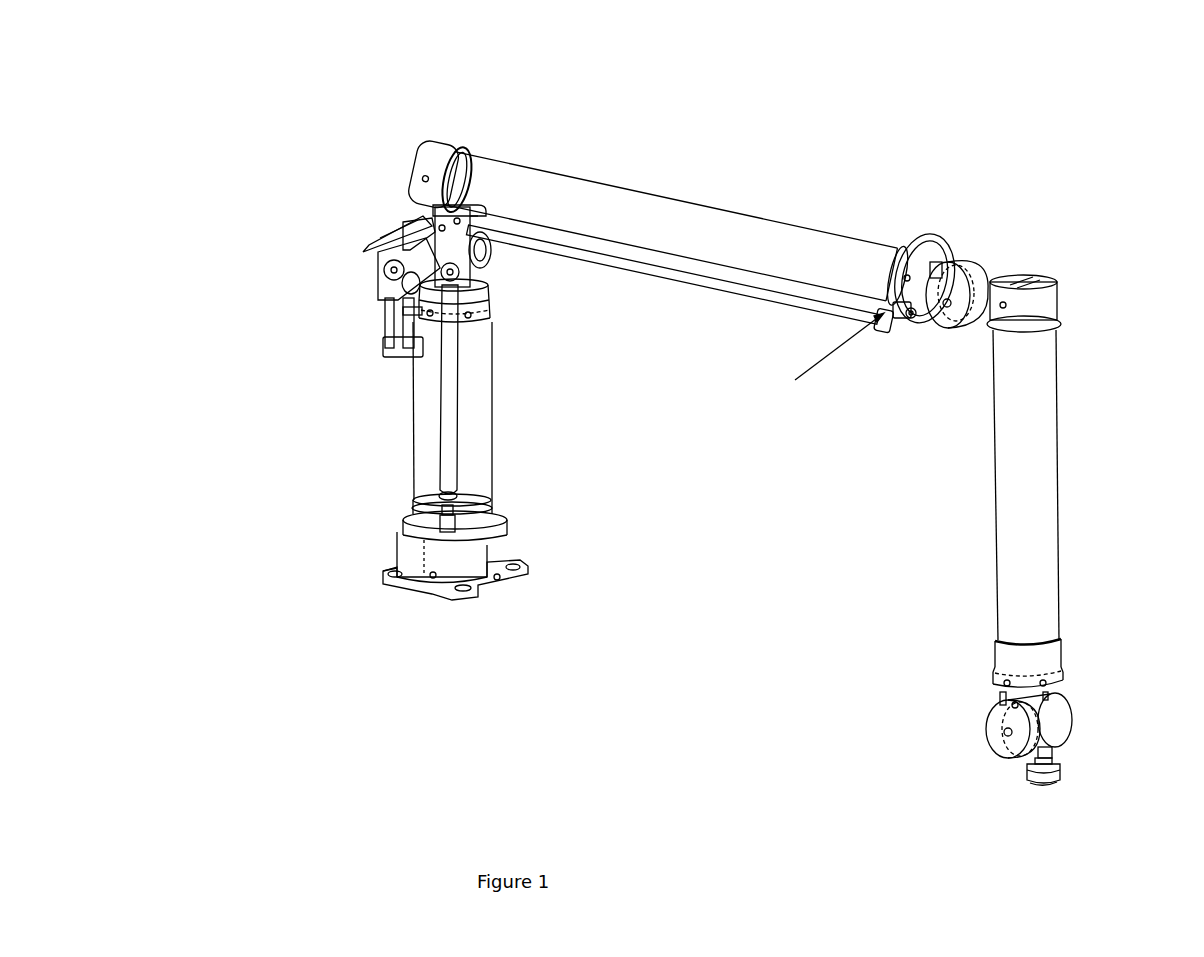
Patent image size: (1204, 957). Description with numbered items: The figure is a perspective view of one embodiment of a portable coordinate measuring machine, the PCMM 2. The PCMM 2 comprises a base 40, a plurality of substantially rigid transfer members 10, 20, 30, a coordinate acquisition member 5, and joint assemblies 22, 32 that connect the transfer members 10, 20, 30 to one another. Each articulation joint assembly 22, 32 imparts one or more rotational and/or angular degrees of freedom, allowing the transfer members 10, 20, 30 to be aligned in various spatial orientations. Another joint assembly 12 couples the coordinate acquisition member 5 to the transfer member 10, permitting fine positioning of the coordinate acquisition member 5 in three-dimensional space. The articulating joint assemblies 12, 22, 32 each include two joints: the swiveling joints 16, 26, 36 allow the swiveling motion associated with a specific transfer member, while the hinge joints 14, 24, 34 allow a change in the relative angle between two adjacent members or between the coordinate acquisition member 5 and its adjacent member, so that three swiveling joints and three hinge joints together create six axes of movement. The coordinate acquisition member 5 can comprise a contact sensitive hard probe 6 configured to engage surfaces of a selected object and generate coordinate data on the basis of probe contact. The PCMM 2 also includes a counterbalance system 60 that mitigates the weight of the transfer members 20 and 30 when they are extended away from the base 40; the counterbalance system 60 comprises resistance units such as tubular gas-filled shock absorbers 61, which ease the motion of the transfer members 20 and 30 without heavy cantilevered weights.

The coordinate measuring machine 2 is at (272, 114).
The coordinate acquisition member 5 is at (1050, 771).
The hard probe 6 is at (1028, 781).
The transfer member 10 is at (1042, 511).
The joint assembly 12 is at (1060, 695).
The hinge joint 14 is at (1000, 730).
The swiveling joint 16 is at (1003, 655).
The transfer member 20 is at (628, 205).
The joint assembly 22 is at (1005, 298).
The hinge joint 24 is at (953, 308).
The swiveling joint 26 is at (910, 318).
The transfer member 30 is at (418, 402).
The joint assembly 32 is at (424, 169).
The hinge joint 34 is at (486, 250).
The swiveling joint 36 is at (470, 332).
The base 40 is at (448, 557).
The counterbalance system 60 is at (466, 490).
The tubular gas-filled shock absorber 61 is at (453, 398).